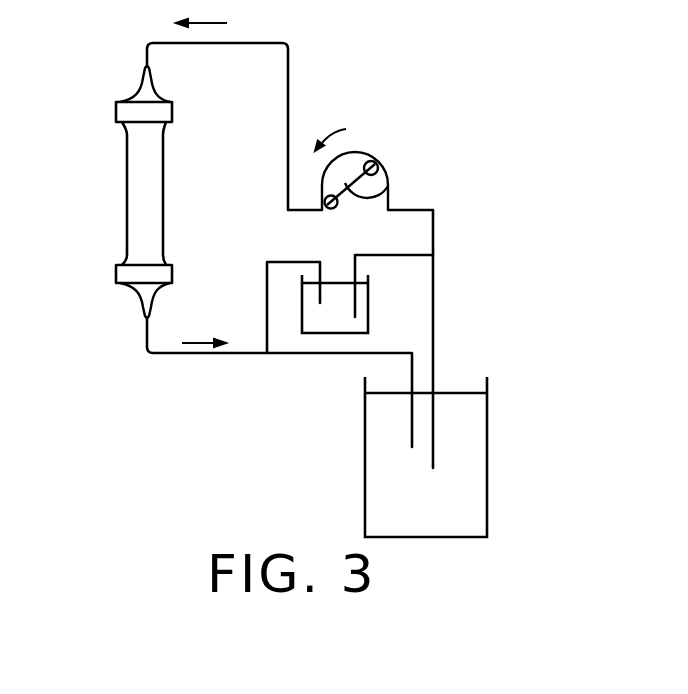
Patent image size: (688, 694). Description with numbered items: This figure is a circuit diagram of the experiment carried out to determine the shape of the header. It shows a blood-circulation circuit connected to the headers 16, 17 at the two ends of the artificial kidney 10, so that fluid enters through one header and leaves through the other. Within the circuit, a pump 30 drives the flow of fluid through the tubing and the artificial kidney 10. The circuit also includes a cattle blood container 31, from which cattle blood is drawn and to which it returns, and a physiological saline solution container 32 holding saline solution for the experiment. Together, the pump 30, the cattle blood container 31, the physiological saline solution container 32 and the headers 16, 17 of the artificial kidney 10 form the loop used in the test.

The artificial kidney 10 is at (136, 172).
The header 16 is at (137, 98).
The header 17 is at (140, 296).
The pump 30 is at (373, 188).
The cattle blood container 31 is at (487, 481).
The physiological saline solution container 32 is at (368, 319).